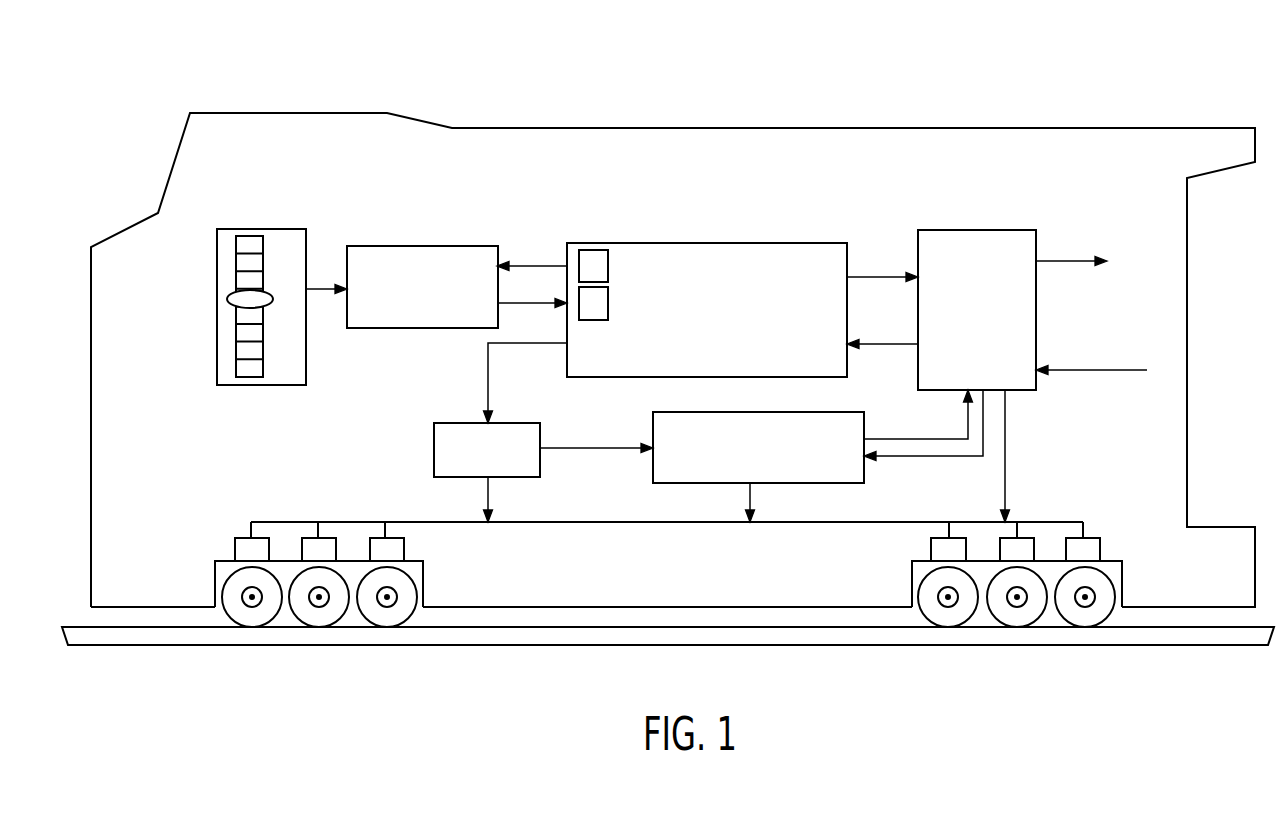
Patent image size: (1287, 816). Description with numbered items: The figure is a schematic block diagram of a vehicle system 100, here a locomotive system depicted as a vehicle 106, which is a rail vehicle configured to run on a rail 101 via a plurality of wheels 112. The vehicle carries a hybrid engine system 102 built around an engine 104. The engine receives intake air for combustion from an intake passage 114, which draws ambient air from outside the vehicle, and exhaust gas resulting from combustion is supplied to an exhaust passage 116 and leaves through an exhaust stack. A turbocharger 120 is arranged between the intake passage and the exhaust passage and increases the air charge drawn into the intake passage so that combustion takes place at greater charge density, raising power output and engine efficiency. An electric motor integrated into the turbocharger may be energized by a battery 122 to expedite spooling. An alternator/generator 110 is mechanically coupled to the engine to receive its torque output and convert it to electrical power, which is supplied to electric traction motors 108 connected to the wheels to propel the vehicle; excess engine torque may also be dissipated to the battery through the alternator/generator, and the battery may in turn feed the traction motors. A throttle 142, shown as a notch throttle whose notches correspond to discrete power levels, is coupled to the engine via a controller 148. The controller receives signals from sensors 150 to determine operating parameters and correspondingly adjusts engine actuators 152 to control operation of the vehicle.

The vehicle system 100 is at (1100, 88).
The rail 101 is at (1180, 646).
The hybrid engine system 102 is at (532, 213).
The engine 104 is at (708, 243).
The vehicle 106 is at (933, 128).
The electric traction motors 108 is at (235, 550).
The alternator/generator 110 is at (434, 452).
The wheels 112 is at (400, 583).
The intake passage 114 is at (1063, 374).
The exhaust passage 116 is at (1048, 258).
The turbocharger 120 is at (978, 230).
The battery 122 is at (653, 466).
The throttle 142 is at (245, 230).
The controller 148 is at (424, 246).
The sensors 150 is at (608, 276).
The engine actuators 152 is at (608, 310).